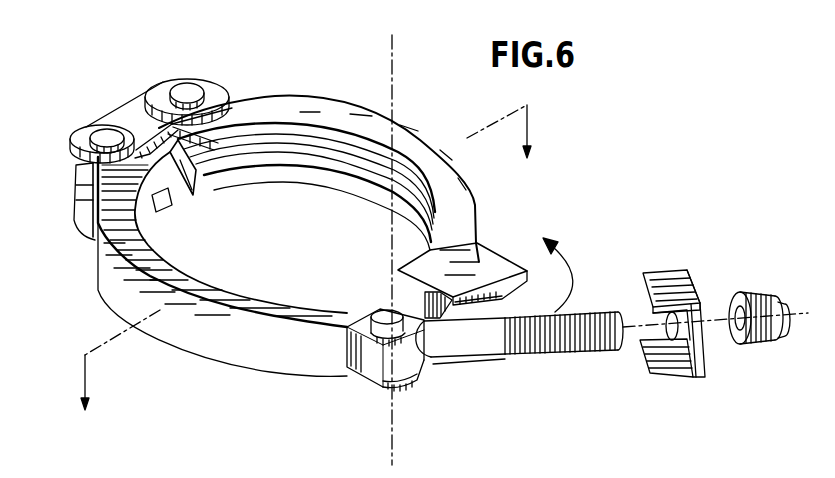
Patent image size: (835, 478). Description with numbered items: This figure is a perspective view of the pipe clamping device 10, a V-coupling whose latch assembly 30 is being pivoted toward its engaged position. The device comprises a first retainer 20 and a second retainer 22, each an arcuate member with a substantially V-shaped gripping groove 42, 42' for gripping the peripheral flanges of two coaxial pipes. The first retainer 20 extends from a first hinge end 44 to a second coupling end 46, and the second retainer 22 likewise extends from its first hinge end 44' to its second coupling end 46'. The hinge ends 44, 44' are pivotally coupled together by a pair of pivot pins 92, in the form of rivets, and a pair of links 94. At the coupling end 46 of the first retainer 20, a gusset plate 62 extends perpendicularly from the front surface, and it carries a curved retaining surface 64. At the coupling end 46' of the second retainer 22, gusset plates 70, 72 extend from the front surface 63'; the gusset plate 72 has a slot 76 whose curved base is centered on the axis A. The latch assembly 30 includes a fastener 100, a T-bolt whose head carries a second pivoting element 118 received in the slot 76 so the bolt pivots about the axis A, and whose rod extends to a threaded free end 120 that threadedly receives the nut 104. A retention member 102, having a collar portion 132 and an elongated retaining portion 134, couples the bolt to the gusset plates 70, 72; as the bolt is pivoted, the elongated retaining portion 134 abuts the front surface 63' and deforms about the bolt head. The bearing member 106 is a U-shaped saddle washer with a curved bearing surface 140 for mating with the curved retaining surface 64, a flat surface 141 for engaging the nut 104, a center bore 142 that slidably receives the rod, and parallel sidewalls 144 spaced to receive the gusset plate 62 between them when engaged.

The pipe clamping device 10 is at (120, 72).
The first retainer 20 is at (355, 70).
The second retainer 22 is at (112, 287).
The latch assembly 30 is at (178, 78).
The gripping groove 42 is at (317, 201).
The gripping groove 42' is at (196, 186).
The first hinge end 44 is at (232, 98).
The first hinge end 44' is at (84, 187).
The second coupling end 46 is at (322, 216).
The second coupling end 46' is at (241, 232).
The gusset plate 62 is at (463, 280).
The front surface 63' is at (314, 366).
The curved retaining surface 64 is at (495, 265).
The gusset plate 70 is at (380, 383).
The gusset plate 72 is at (410, 387).
The slot 76 is at (368, 285).
The pivot pin 92 is at (190, 88).
The link 94 is at (75, 157).
The fastener 100 is at (505, 360).
The retention member 102 is at (438, 372).
The nut 104 is at (780, 262).
The bearing member 106 is at (655, 272).
The second pivoting element 118 is at (380, 310).
The threaded free end 120 is at (615, 292).
The collar portion 132 is at (455, 343).
The elongated retaining portion 134 is at (377, 355).
The curved bearing surface 140 is at (683, 357).
The flat surface 141 is at (700, 343).
The center bore 142 is at (667, 330).
The sidewall 144 is at (672, 282).
The axis A is at (393, 80).